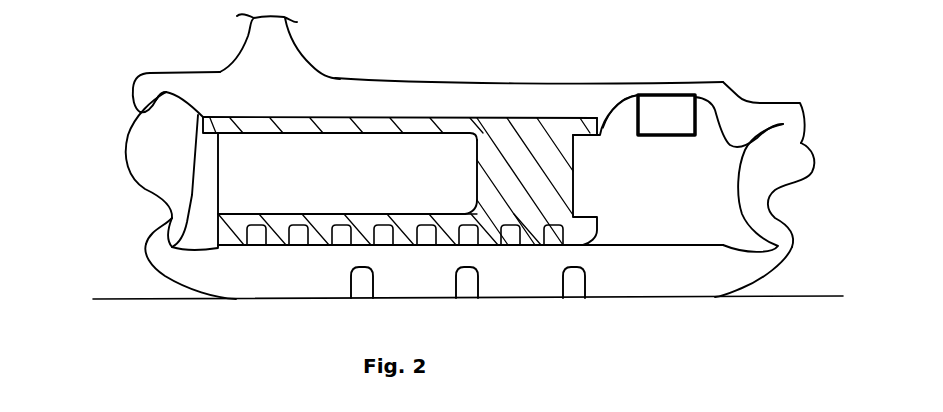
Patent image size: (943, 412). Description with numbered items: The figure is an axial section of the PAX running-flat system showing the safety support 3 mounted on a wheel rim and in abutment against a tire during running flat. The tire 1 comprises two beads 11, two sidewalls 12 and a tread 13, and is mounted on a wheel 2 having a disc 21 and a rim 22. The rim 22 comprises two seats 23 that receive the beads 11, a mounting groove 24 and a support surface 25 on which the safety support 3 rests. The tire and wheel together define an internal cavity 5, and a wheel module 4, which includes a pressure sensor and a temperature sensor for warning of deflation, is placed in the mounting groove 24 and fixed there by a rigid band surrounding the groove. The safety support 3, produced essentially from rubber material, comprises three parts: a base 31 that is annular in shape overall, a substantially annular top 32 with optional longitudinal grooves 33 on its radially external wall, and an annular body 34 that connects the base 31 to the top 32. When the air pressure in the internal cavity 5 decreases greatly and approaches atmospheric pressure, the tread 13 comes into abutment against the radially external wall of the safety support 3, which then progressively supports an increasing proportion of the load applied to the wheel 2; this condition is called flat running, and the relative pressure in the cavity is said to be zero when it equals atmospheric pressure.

The tire 1 is at (175, 268).
The wheel 2 is at (437, 63).
The safety support 3 is at (287, 263).
The wheel module 4 is at (662, 122).
The internal cavity 5 is at (680, 173).
The bead 11 is at (150, 133).
The sidewall 12 is at (163, 224).
The tread 13 is at (663, 257).
The disc 21 is at (257, 25).
The rim 22 is at (298, 90).
The seat 23 is at (163, 93).
The mounting groove 24 is at (622, 115).
The support surface 25 is at (437, 117).
The base 31 is at (350, 217).
The top 32 is at (377, 122).
The longitudinal grooves 33 is at (480, 197).
The annular body 34 is at (530, 172).